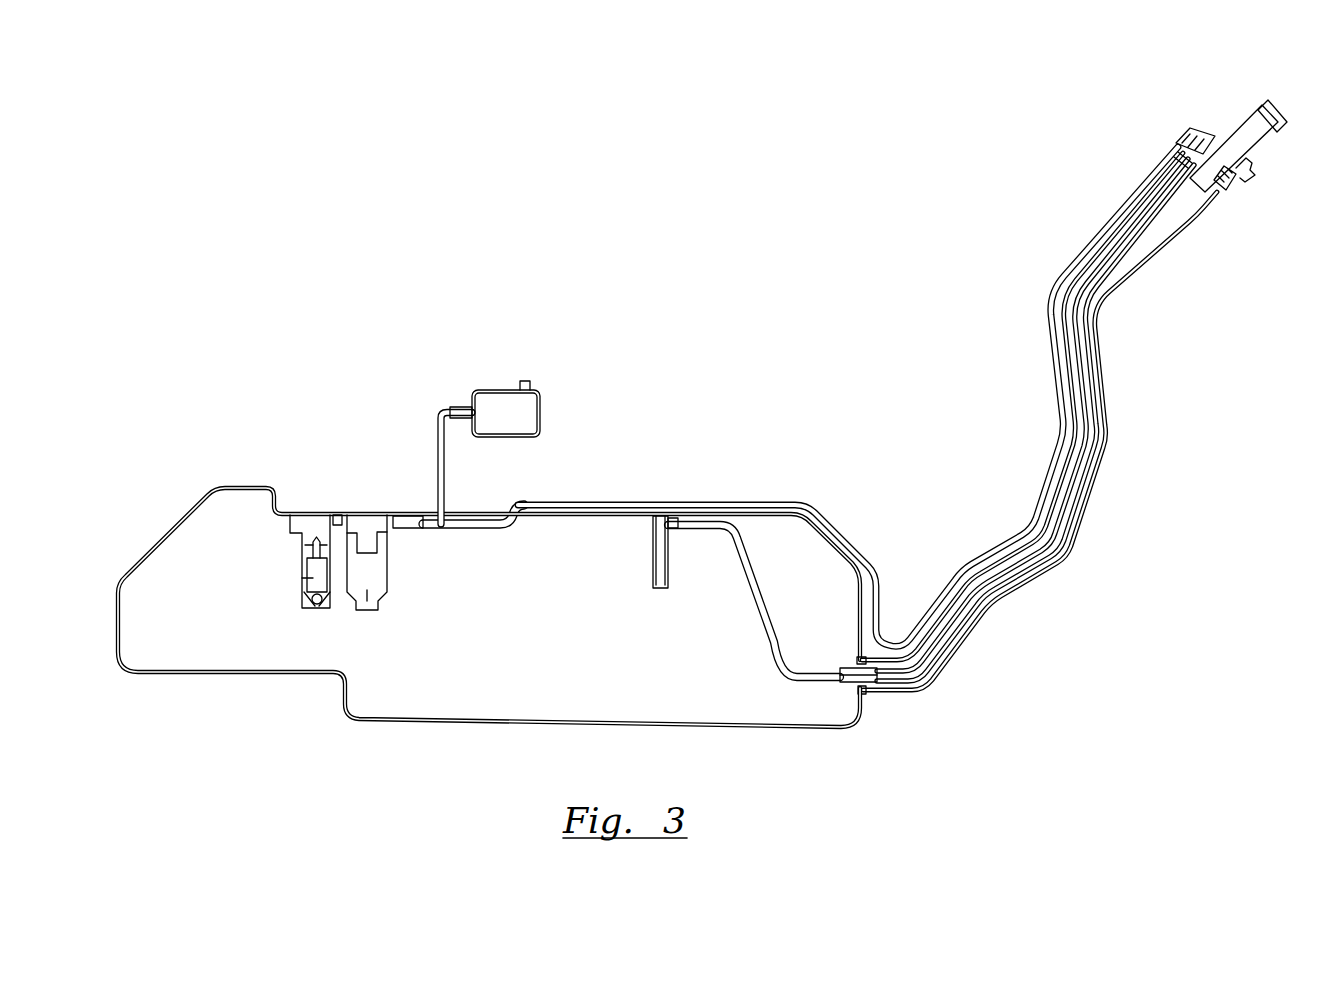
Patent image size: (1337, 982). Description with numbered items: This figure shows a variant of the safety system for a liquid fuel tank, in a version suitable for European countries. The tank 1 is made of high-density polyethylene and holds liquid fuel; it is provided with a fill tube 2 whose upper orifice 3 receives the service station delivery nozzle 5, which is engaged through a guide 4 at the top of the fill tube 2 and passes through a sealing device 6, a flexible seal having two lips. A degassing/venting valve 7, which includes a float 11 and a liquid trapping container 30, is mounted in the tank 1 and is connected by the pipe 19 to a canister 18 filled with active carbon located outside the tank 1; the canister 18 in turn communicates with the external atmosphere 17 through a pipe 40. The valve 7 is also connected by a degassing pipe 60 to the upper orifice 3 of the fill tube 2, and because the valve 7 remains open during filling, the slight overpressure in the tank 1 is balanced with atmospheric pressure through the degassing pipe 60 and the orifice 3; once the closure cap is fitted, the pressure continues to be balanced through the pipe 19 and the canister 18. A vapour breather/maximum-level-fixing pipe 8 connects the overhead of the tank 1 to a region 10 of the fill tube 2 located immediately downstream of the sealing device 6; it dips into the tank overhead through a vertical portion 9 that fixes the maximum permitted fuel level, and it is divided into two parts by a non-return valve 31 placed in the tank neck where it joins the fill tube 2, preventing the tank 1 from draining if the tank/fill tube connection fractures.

The tank 1 is at (383, 708).
The fill tube 2 is at (1112, 378).
The upper orifice 3 is at (1233, 125).
The guide 4 is at (1246, 158).
The delivery nozzle 5 is at (1278, 114).
The sealing device 6 is at (1230, 186).
The degassing/venting valve 7 is at (315, 537).
The vapour breather/maximum-level-fixing pipe 8 is at (747, 560).
The vertical portion 9 is at (653, 563).
The region 10 is at (1190, 146).
The float 11 is at (300, 580).
The external atmosphere 17 is at (690, 390).
The canister 18 is at (517, 417).
The pipe 19 is at (448, 487).
The liquid trapping container 30 is at (370, 567).
The non-return valve 31 is at (850, 675).
The pipe 40 is at (521, 383).
The degassing pipe 60 is at (545, 498).